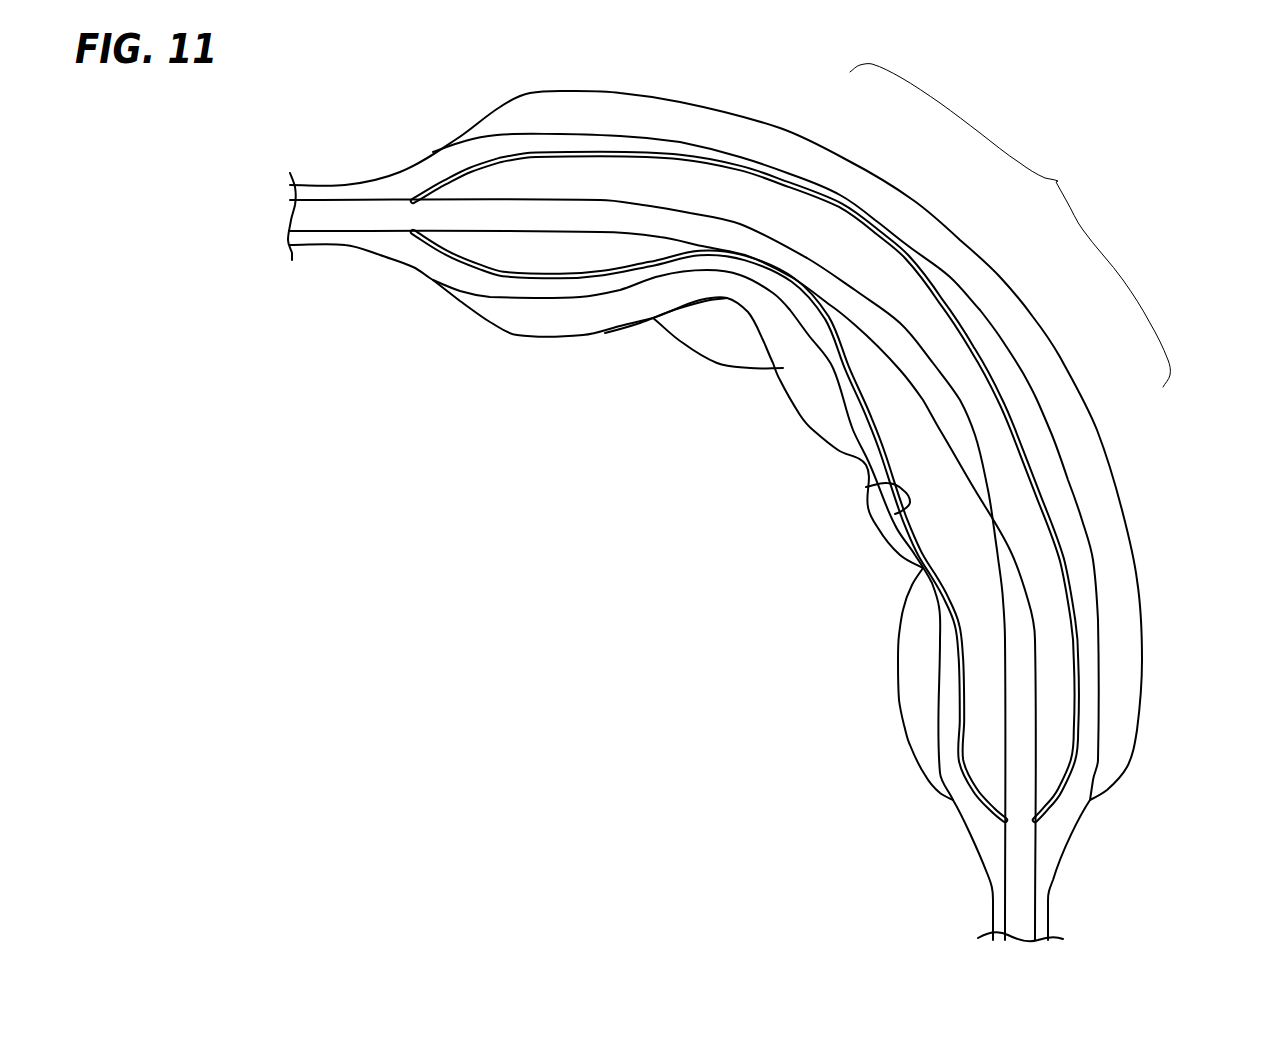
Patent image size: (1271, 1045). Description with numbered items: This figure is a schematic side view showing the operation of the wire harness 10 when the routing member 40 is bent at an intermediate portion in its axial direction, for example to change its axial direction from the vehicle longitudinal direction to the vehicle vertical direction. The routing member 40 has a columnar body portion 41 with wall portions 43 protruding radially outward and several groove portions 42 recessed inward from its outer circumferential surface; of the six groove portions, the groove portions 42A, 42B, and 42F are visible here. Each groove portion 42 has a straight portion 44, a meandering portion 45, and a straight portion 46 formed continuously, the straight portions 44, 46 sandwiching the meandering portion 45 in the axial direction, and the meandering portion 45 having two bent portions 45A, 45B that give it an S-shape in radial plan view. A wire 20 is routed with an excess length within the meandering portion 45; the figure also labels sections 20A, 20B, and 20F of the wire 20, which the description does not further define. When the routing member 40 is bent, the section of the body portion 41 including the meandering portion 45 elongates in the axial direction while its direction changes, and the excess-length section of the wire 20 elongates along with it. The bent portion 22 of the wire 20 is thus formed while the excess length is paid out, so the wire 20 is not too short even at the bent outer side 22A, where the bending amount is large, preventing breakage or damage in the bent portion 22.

The wire harness 10 is at (1133, 84).
The wire 20 is at (292, 216).
The tube body 20A is at (460, 212).
The rear portion of tube 20B is at (417, 260).
The front portion of tube 20F is at (500, 142).
The bent portion 22 is at (1010, 225).
The bent outer side 22A is at (1000, 338).
The routing member 40 is at (1020, 936).
The body portion 41 is at (1125, 765).
The groove portion 42 is at (718, 343).
The groove portion 42A is at (490, 250).
The groove portion 42B is at (585, 307).
The groove portion 42F is at (603, 107).
The wall portion 43 is at (1082, 690).
The straight portion 44 is at (548, 172).
The meandering portion 45 is at (725, 458).
The bent portion 45A is at (760, 262).
The bent portion 45B is at (877, 487).
The straight portion 46 is at (983, 737).